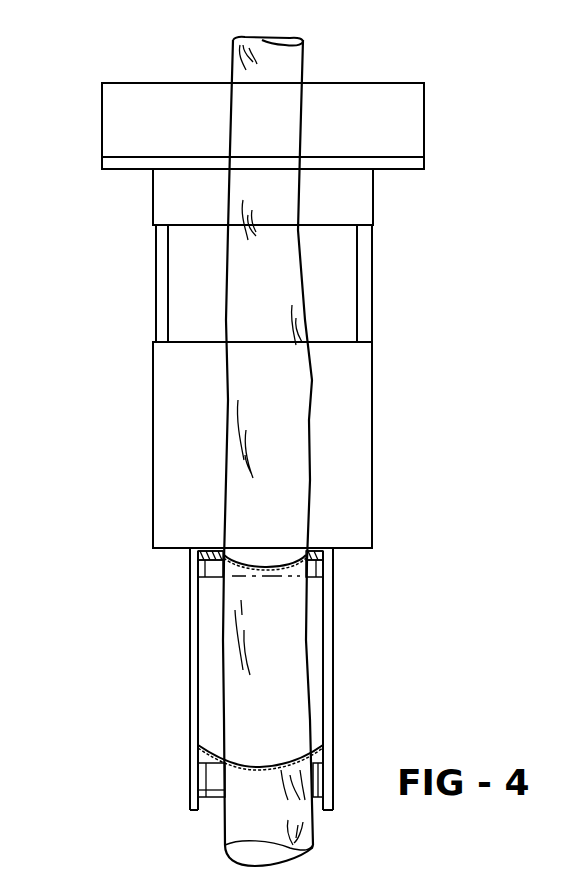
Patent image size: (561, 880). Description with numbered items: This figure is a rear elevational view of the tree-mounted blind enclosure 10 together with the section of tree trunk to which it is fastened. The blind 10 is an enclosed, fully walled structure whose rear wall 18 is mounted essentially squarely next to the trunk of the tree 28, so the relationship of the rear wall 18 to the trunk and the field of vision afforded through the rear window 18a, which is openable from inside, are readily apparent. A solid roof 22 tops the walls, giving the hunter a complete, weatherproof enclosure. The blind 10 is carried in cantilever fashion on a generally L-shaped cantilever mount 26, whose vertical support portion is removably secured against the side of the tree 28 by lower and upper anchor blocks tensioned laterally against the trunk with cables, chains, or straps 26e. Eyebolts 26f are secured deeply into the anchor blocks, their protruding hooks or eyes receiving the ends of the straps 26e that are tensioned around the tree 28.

The tree-mounted blind enclosure 10 is at (403, 67).
The roof 22 is at (424, 120).
The rear wall 18 is at (362, 421).
The rear window 18a is at (350, 290).
The tree 28 is at (233, 62).
The cantilever mount 26 is at (354, 678).
The straps 26e is at (246, 562).
The eyebolts 26f is at (198, 552).